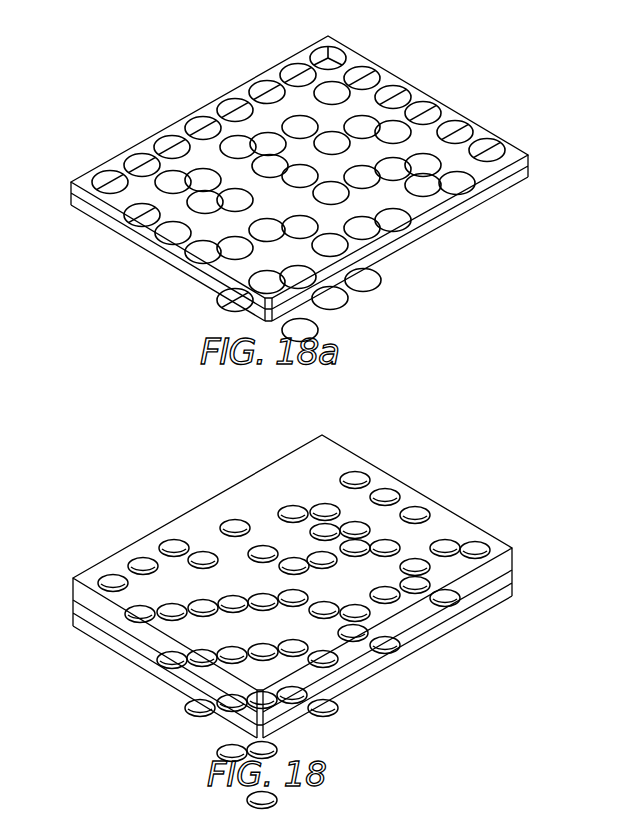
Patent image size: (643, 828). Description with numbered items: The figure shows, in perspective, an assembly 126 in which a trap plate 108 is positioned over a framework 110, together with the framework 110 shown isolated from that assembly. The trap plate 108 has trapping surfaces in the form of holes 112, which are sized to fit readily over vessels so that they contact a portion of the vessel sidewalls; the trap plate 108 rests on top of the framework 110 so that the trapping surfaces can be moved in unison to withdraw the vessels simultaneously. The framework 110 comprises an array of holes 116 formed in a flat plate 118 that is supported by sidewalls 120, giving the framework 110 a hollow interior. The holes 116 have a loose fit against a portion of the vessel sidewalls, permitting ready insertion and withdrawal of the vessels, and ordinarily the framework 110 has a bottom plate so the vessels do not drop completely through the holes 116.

In FIG. 18, the trap plate 108 is at (401, 485).
In FIG. 18A, the framework 110 is at (337, 189).
In FIG. 18, the framework 110 is at (329, 622).
In FIG. 18, the holes 112 is at (481, 546).
In FIG. 18A, the holes 116 is at (384, 101).
In FIG. 18A, the flat plate 118 is at (448, 114).
In FIG. 18A, the sidewalls 120 is at (530, 158).
In FIG. 18, the assembly 126 is at (119, 709).